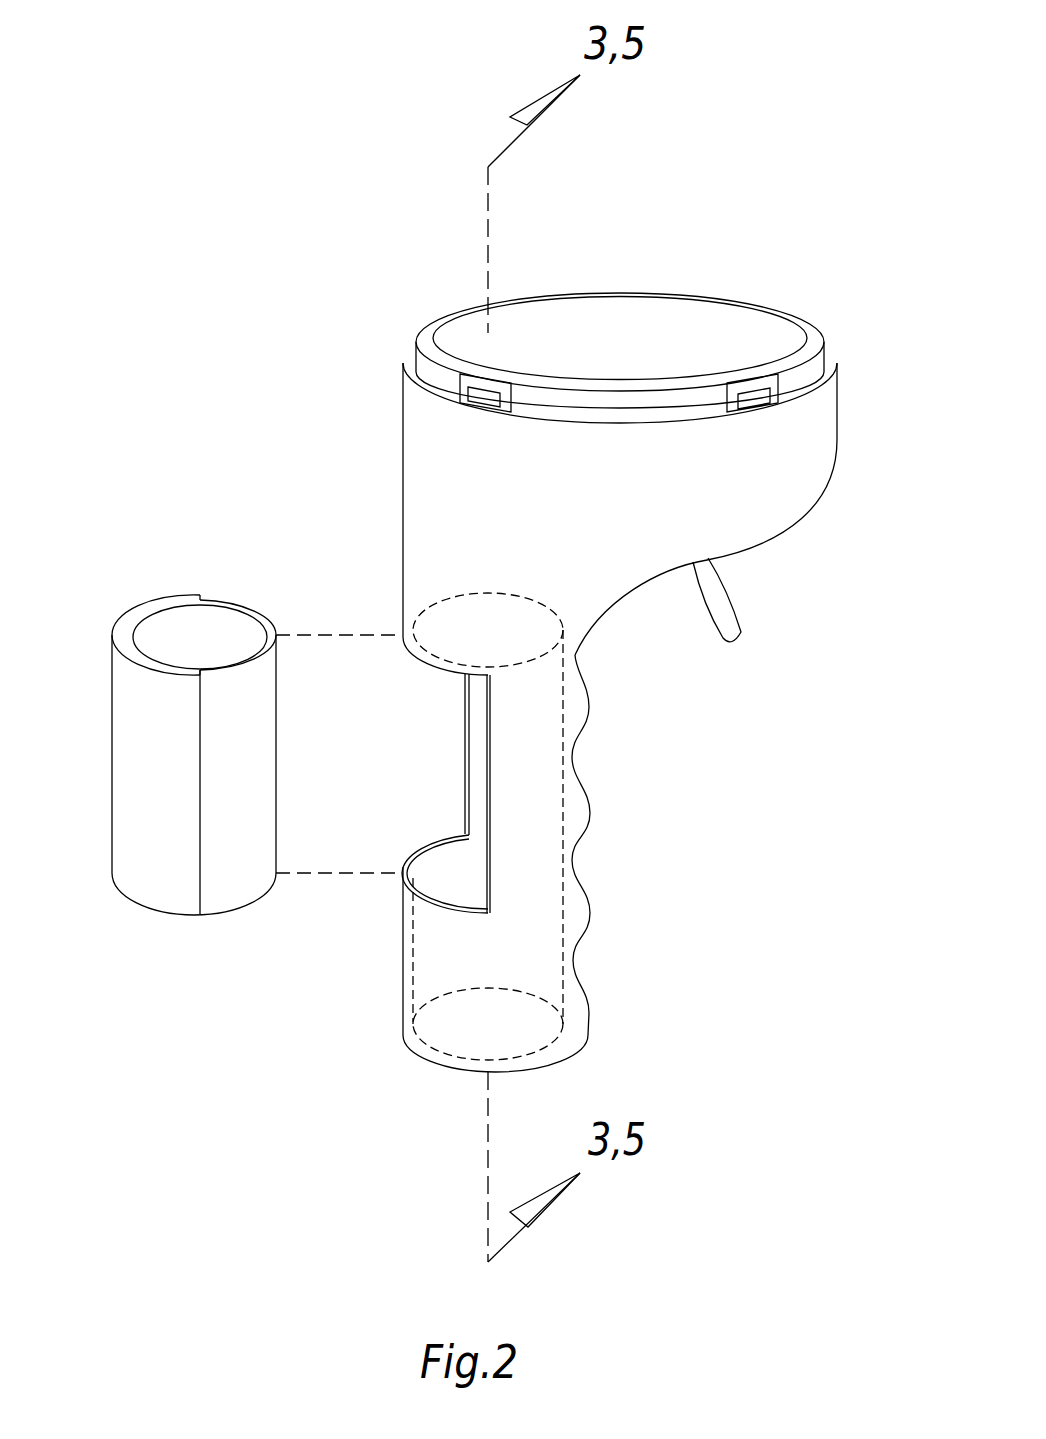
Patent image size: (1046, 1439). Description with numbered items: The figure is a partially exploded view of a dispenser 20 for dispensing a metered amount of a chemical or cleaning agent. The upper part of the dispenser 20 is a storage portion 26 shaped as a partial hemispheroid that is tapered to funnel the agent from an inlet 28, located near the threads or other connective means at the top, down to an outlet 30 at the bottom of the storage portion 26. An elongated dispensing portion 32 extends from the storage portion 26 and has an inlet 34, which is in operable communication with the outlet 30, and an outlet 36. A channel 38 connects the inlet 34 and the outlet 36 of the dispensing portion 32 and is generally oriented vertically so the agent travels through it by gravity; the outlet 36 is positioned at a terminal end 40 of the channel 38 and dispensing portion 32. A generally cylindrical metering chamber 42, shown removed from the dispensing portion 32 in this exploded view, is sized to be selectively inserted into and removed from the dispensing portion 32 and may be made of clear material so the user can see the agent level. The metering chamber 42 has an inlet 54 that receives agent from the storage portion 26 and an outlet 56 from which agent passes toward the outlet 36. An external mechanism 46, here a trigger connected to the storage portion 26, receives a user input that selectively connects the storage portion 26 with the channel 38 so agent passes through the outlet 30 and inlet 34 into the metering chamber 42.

The dispenser 20 is at (574, 658).
The storage portion 26 is at (372, 405).
The inlet of the storage portion 28 is at (745, 315).
The outlet of the storage portion 30 is at (466, 650).
The dispensing portion 32 is at (569, 895).
The inlet of the dispensing portion 34 is at (434, 690).
The outlet of the dispensing portion 36 is at (457, 1098).
The channel 38 is at (425, 942).
The terminal end 40 is at (592, 1075).
The metering chamber 42 is at (245, 744).
The external mechanism 46 is at (729, 612).
The inlet of the measuring chamber 54 is at (243, 620).
The outlet of the measuring chamber 56 is at (256, 928).